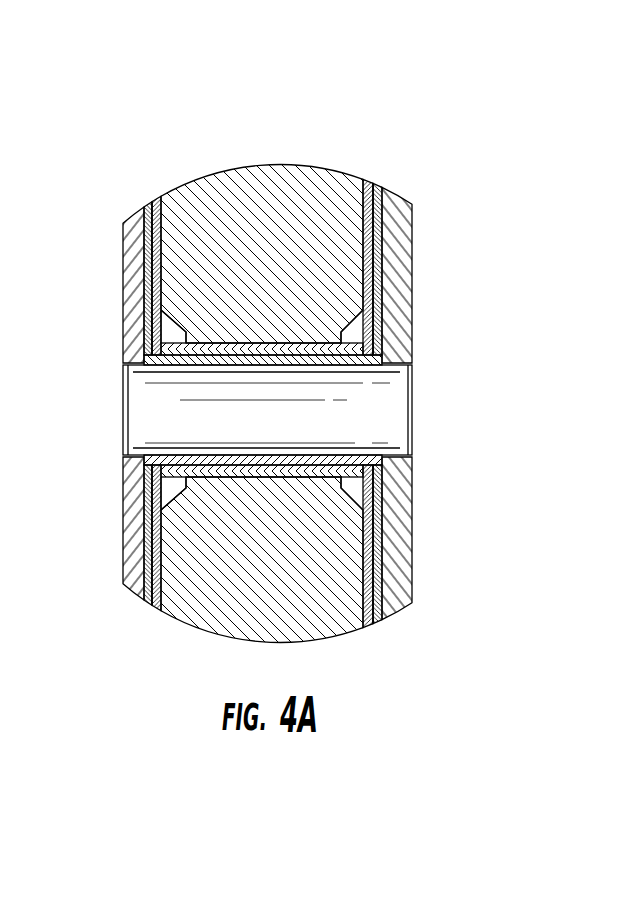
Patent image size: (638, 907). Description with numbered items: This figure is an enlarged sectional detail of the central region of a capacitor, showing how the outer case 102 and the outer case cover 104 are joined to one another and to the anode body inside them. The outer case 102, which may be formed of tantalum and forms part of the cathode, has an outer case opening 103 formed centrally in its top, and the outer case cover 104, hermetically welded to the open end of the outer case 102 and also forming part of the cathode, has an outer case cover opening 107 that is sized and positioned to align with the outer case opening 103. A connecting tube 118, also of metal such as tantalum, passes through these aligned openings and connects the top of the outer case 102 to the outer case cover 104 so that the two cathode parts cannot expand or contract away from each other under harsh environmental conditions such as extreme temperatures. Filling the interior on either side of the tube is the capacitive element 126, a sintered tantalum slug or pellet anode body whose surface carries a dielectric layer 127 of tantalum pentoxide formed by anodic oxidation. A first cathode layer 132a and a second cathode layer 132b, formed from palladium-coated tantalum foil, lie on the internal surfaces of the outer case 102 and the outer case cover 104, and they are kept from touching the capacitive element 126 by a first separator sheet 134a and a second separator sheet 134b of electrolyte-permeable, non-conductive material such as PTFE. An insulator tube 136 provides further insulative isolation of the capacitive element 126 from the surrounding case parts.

The outer case 102 is at (134, 252).
The outer case opening 103 is at (123, 367).
The outer case cover 104 is at (412, 308).
The outer case cover opening 107 is at (412, 363).
The connecting tube 118 is at (358, 430).
The capacitive element 126 is at (308, 222).
The dielectric layer 127 is at (160, 204).
The first cathode layer 132a is at (148, 205).
The second cathode layer 132b is at (377, 183).
The first separator sheet 134a is at (152, 205).
The second separator sheet 134b is at (372, 182).
The insulator tube 136 is at (340, 490).